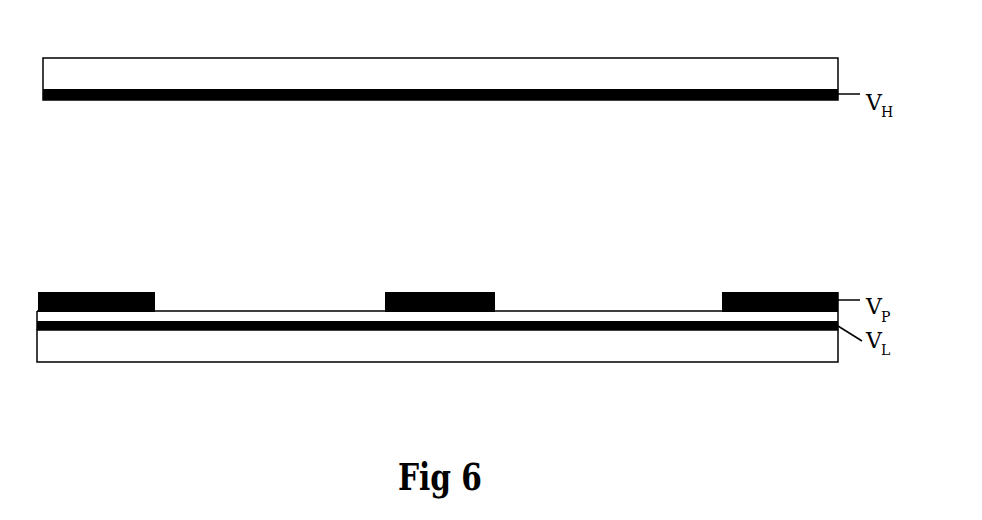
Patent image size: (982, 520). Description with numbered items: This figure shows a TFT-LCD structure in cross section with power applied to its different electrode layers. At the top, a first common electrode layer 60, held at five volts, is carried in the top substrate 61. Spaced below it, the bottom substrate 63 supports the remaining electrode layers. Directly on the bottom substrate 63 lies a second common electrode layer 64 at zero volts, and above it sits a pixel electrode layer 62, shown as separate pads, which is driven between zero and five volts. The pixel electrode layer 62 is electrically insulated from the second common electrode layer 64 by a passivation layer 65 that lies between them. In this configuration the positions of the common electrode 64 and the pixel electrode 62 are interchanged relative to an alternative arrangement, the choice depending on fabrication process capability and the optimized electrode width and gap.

The first common electrode layer 60 is at (270, 100).
The top substrate 61 is at (108, 59).
The pixel electrode layer 62 is at (103, 292).
The bottom substrate 63 is at (112, 340).
The second common electrode layer 64 is at (570, 328).
The passivation layer 65 is at (618, 311).